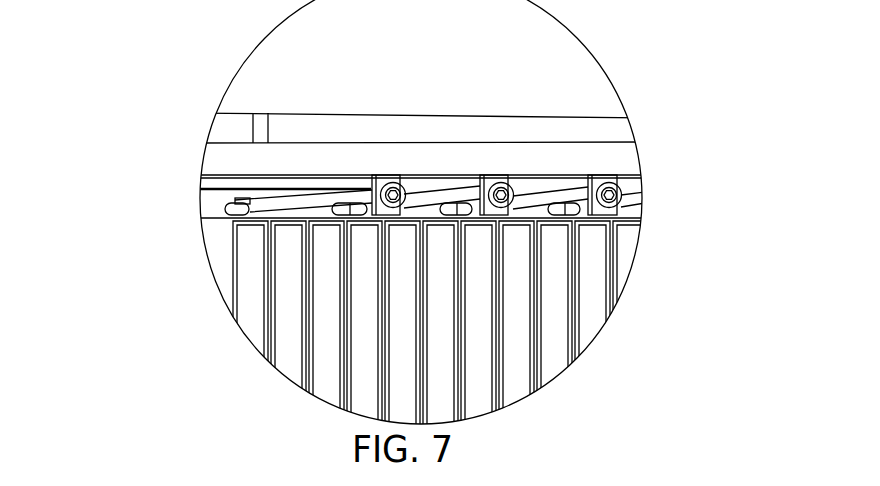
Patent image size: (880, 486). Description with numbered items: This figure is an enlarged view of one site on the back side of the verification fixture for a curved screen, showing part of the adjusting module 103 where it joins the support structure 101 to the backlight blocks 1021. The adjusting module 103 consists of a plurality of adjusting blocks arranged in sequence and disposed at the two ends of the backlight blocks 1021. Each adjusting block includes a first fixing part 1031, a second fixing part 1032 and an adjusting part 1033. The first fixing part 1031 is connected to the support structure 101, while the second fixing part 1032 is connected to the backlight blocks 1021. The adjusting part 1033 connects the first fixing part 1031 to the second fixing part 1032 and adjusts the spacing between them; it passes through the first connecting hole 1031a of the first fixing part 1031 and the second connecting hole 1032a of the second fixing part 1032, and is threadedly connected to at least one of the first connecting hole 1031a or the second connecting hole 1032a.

The support structure 101 is at (600, 154).
The backlight blocks 1021 is at (625, 260).
The adjusting module 103 is at (336, 220).
The first fixing part 1031 is at (362, 188).
The first connecting hole 1031a is at (616, 175).
The second fixing part 1032 is at (361, 236).
The second connecting hole 1032a is at (243, 216).
The adjusting part 1033 is at (272, 200).